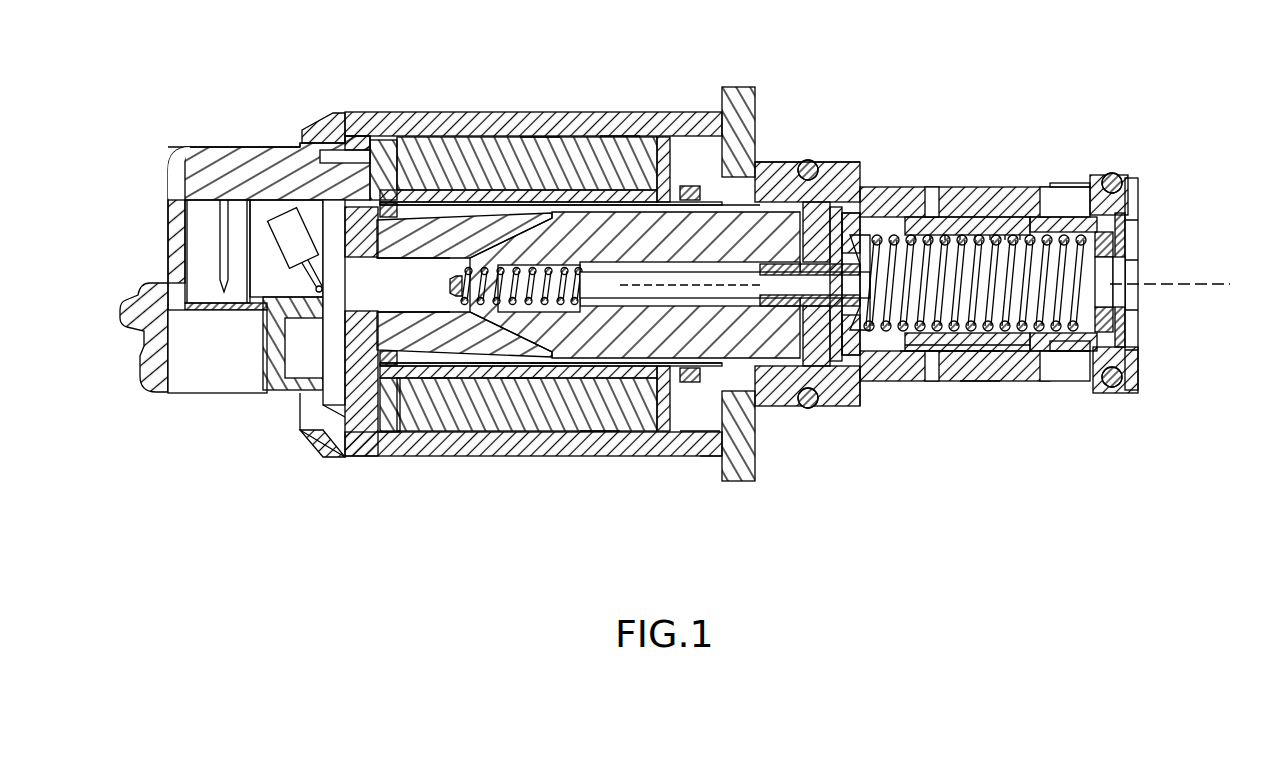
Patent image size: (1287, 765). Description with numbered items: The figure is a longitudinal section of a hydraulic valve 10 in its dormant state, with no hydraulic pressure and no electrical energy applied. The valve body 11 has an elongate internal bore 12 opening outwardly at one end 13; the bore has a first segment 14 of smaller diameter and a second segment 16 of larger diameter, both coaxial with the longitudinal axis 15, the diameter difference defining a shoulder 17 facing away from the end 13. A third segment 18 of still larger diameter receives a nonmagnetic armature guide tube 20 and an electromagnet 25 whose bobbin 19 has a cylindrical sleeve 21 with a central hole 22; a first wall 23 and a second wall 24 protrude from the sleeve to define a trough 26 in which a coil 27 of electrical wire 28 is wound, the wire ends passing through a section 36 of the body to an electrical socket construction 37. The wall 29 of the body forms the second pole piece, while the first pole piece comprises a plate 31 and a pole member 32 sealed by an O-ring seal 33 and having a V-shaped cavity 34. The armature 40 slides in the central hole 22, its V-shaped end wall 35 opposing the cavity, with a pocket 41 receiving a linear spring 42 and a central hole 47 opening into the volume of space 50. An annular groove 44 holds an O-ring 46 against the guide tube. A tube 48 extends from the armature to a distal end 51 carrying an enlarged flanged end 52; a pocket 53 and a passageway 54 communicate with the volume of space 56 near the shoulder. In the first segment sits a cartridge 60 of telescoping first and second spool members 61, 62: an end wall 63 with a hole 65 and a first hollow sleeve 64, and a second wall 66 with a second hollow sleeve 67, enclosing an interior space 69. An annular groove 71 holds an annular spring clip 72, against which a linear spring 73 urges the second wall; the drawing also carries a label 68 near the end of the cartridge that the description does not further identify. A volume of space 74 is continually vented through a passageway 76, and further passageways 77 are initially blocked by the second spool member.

The hydraulic valve 10 is at (816, 97).
The valve body 11 is at (565, 122).
The internal bore 12 is at (945, 345).
The end of the valve body 13 is at (1108, 268).
The first segment 14 is at (975, 200).
The longitudinal axis 15 is at (1180, 282).
The second segment 16 is at (775, 190).
The shoulder 17 is at (836, 207).
The third segment 18 is at (617, 122).
The bobbin 19 is at (362, 112).
The armature guide tube 20 is at (470, 135).
The cylindrical sleeve 21 is at (500, 213).
The central hole 22 is at (424, 148).
The first wall 23 is at (668, 150).
The second wall 24 is at (385, 136).
The electromagnet 25 is at (522, 114).
The trough 26 is at (540, 160).
The coil 27 is at (520, 380).
The electrical wire 28 is at (596, 432).
The wall 29 is at (700, 432).
The plate 31 is at (388, 440).
The pole member 32 is at (435, 395).
The O-ring seal 33 is at (338, 420).
The V-shaped cavity 34 is at (500, 340).
The V-shaped end wall 35 is at (558, 300).
The section of the valve body 36 is at (185, 145).
The electrical socket construction 37 is at (228, 312).
The armature 40 is at (662, 400).
The pocket 41 is at (560, 312).
The linear spring 42 is at (625, 306).
The annular groove 44 is at (716, 430).
The O-ring 46 is at (690, 186).
The hole 47 is at (760, 420).
The tube 48 is at (733, 268).
The volume of space 50 is at (598, 190).
The distal end 51 is at (895, 220).
The enlarged flanged end 52 is at (852, 215).
The pocket 53 is at (808, 408).
The passageway 54 is at (812, 162).
The volume of space 56 is at (852, 340).
The cartridge 60 is at (1000, 206).
The first spool member 61 is at (952, 222).
The second spool member 62 is at (1062, 232).
The end wall 63 is at (870, 372).
The first hollow sleeve 64 is at (1040, 380).
The hole 65 is at (930, 352).
The second wall 66 is at (1120, 245).
The second hollow sleeve 67 is at (1082, 345).
The spring seat 68 is at (1112, 294).
The interior space 69 is at (1135, 386).
The annular groove 71 is at (1118, 178).
The annular spring clip 72 is at (1135, 200).
The linear spring 73 is at (1020, 240).
The volume of space 74 is at (978, 352).
The passageway 76 is at (928, 195).
The passageways 77 is at (1062, 375).